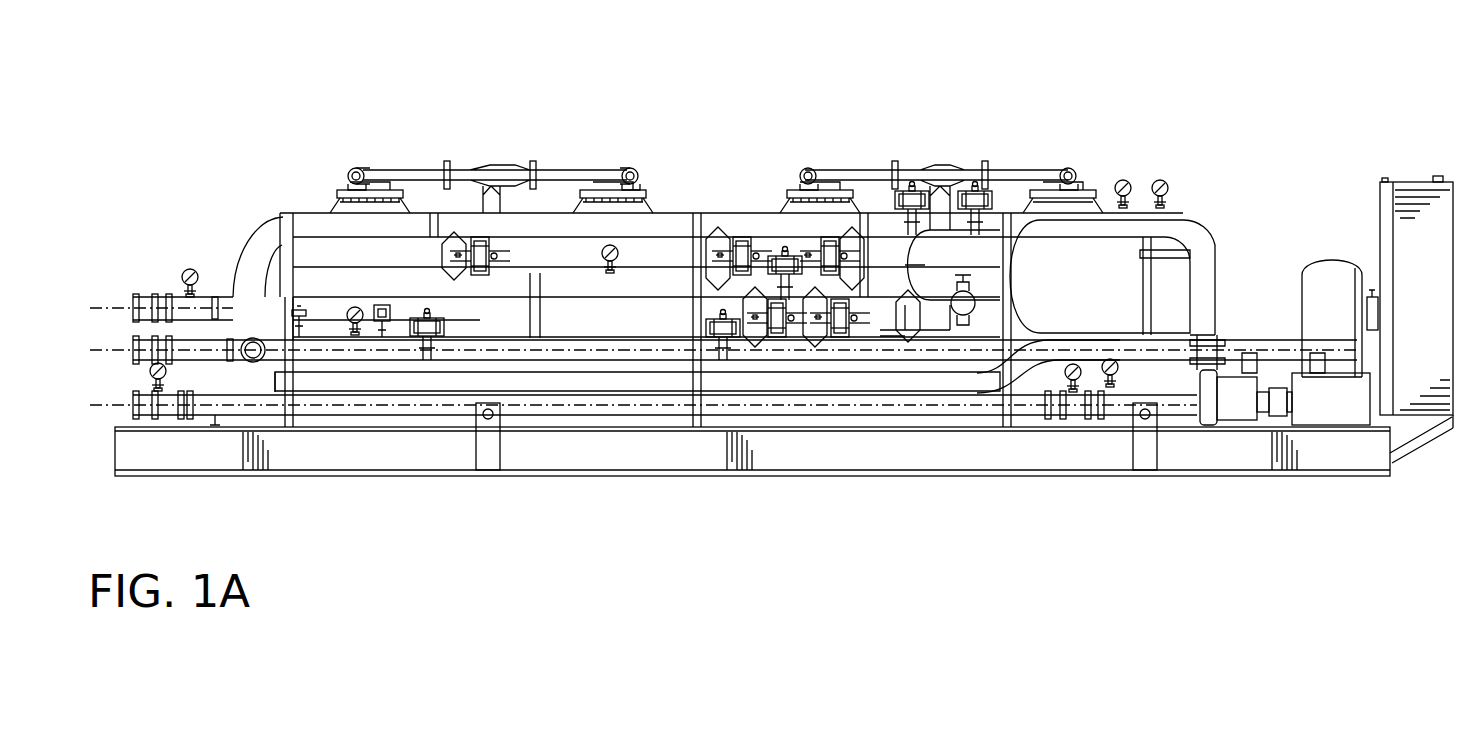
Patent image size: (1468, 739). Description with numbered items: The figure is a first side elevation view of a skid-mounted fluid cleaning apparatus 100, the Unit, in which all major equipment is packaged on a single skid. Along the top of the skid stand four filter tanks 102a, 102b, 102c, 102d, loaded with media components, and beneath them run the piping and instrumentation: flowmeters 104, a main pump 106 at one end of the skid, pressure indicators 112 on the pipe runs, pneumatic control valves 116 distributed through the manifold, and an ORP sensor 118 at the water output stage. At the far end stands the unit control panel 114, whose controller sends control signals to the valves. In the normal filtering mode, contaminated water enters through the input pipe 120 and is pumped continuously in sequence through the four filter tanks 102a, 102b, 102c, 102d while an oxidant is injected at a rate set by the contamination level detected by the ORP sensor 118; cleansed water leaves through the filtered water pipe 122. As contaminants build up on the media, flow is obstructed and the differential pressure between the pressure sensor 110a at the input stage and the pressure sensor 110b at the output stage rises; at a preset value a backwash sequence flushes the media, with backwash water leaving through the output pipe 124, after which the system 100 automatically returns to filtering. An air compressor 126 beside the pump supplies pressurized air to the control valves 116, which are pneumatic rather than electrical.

The fluid cleaning apparatus 100 is at (380, 105).
The filter tank 102a is at (1065, 258).
The filter tank 102b is at (782, 207).
The filter tank 102c is at (640, 207).
The filter tank 102d is at (337, 205).
The flowmeters 104 is at (1130, 378).
The main pump 106 is at (1236, 405).
The pressure sensor 110a is at (1160, 180).
The pressure sensor 110b is at (382, 305).
The pressure indicators 112 is at (190, 268).
The unit control panel 114 is at (1410, 192).
The control valves 116 is at (478, 250).
The ORP sensor 118 is at (300, 312).
The input pipe 120 is at (125, 405).
The filtered water pipe 122 is at (97, 352).
The output pipe 124 is at (100, 308).
The air compressor 126 is at (1310, 290).